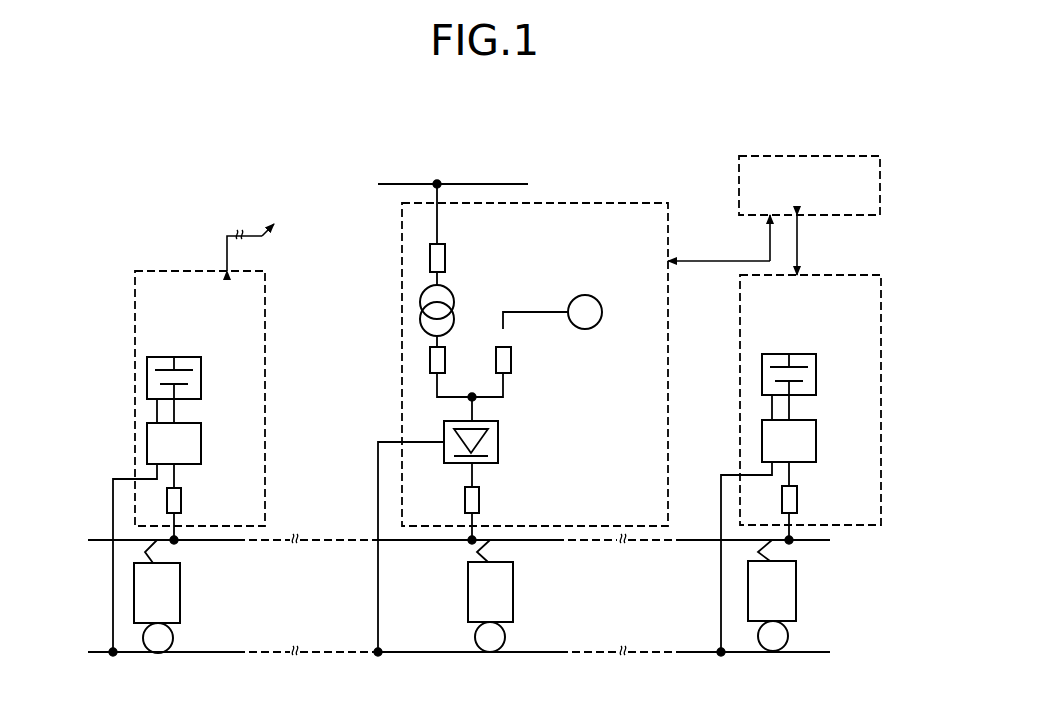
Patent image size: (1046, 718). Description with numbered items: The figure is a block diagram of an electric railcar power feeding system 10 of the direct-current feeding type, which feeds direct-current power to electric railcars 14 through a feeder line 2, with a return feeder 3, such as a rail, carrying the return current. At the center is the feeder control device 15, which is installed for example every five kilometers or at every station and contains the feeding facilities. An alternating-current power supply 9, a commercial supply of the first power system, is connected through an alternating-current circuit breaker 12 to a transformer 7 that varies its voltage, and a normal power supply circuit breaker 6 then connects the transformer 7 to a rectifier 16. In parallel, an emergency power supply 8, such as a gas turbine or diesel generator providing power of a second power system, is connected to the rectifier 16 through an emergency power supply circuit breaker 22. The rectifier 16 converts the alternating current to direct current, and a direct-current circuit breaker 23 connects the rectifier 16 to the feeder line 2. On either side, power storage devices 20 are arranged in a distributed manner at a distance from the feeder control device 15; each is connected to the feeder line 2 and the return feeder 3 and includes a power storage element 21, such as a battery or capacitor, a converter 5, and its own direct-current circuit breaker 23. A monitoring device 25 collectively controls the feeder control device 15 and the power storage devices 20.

The electric railcar power feeding system 10 is at (291, 177).
The feeder line 2 is at (406, 542).
The return feeder 3 is at (538, 653).
The converter 5 is at (201, 443).
The normal power supply circuit breaker 6 is at (430, 360).
The transformer 7 is at (420, 302).
The emergency power supply 8 is at (597, 324).
The alternating-current power supply 9 is at (480, 184).
The alternating-current circuit breaker 12 is at (430, 253).
The electric railcar 14 is at (180, 593).
The feeder control device 15 is at (586, 202).
The rectifier 16 is at (498, 440).
The power storage device 20 is at (166, 268).
The power storage element 21 is at (201, 377).
The emergency power supply circuit breaker 22 is at (511, 360).
The direct-current circuit breaker 23 is at (181, 500).
The monitoring device 25 is at (738, 183).